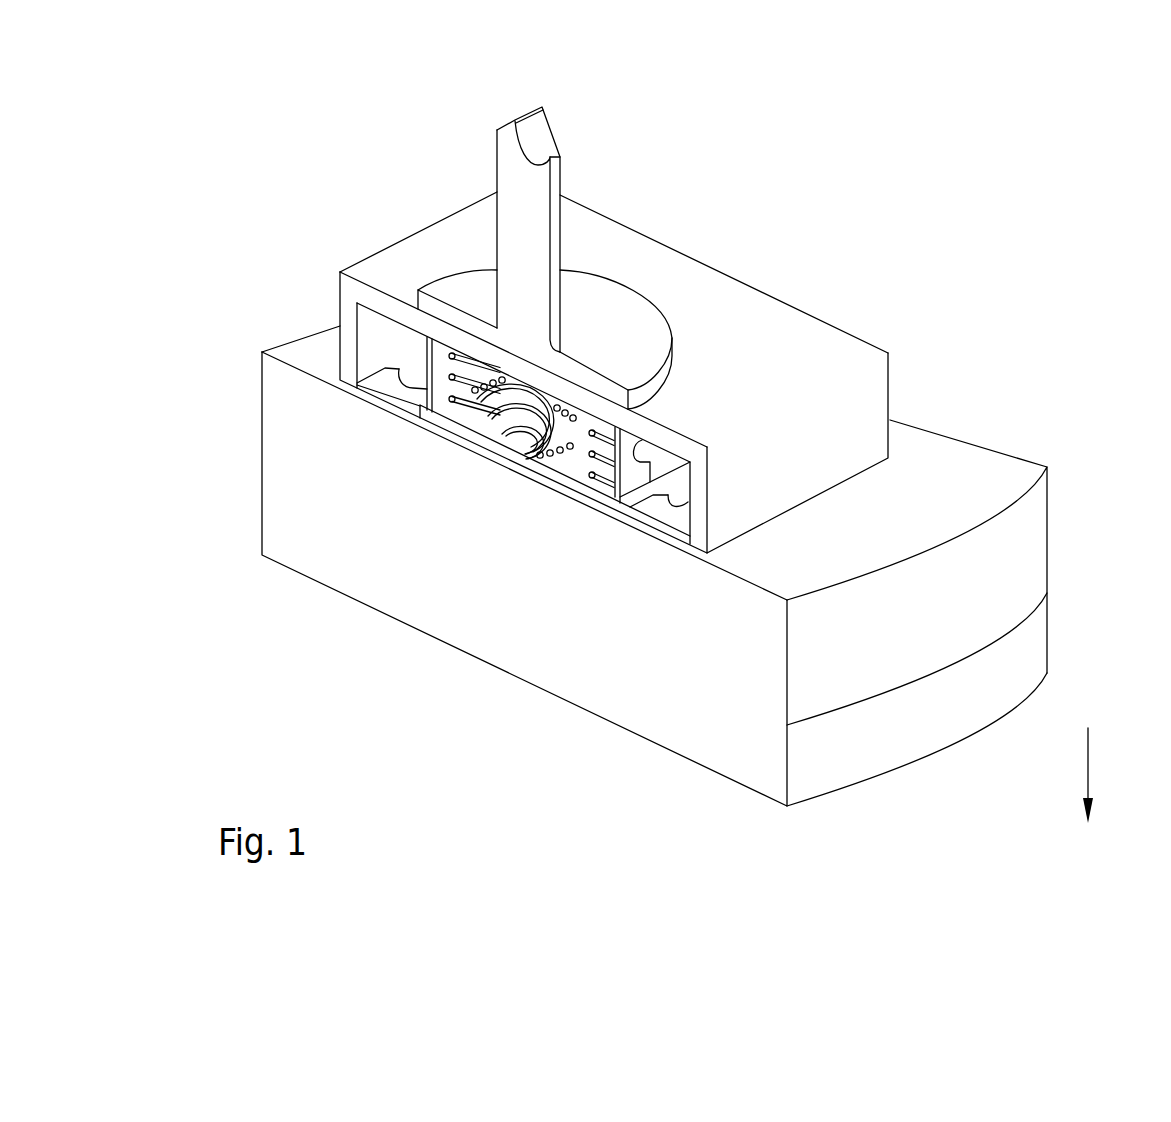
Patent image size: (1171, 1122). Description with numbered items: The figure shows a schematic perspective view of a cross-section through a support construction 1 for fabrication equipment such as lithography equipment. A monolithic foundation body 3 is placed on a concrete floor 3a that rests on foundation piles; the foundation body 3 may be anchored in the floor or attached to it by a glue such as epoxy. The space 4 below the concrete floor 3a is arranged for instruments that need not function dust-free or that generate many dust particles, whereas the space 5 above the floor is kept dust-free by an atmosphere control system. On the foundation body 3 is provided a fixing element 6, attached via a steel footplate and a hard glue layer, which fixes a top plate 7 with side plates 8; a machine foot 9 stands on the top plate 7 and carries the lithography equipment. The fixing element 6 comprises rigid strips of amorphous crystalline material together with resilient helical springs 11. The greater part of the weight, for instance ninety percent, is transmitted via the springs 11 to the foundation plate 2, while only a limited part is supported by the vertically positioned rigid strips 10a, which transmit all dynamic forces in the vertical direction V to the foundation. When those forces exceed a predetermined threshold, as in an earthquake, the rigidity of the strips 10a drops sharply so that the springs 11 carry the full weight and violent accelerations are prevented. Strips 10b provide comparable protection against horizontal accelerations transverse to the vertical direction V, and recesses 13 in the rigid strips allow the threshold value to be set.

The support construction 1 is at (820, 270).
The foundation plate 2 is at (517, 458).
The foundation body 3 is at (1033, 552).
The concrete floor 3a is at (1033, 655).
The space below the concrete floor 4 is at (684, 811).
The space above the concrete floor 5 is at (928, 400).
The fixing element 6 is at (563, 478).
The top plate 7 is at (806, 366).
The side plates 8 is at (834, 446).
The machine foot 9 is at (618, 298).
The vertically positioned rigid strips 10a is at (438, 370).
The horizontal protection strips 10b is at (386, 378).
The helical springs 11 is at (490, 398).
The recesses 13 is at (415, 383).
The vertical direction V is at (1088, 767).